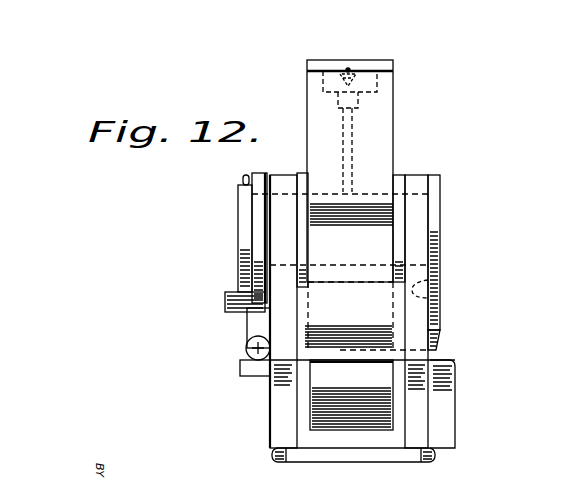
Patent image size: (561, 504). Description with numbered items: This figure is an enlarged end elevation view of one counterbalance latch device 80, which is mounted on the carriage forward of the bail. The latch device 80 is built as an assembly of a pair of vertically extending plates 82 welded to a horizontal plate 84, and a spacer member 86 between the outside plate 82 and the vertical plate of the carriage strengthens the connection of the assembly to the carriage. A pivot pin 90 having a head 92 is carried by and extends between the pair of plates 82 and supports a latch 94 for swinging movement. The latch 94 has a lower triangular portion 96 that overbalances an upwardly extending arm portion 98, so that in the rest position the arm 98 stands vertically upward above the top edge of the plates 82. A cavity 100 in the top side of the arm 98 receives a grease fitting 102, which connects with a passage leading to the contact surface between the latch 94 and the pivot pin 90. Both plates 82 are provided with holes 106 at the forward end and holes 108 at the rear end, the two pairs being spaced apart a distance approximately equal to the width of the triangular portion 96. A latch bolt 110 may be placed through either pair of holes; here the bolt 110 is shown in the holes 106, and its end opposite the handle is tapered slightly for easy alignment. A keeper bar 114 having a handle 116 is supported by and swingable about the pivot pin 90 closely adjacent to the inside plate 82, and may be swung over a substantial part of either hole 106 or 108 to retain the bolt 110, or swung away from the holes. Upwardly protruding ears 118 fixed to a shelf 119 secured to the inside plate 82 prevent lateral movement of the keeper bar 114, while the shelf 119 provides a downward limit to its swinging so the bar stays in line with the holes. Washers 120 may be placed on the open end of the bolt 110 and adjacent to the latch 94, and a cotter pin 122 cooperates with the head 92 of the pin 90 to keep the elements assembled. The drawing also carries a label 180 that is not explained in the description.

The counterbalance latch device 80 is at (475, 135).
The vertically extending plates 82 is at (283, 174).
The horizontal plate 84 is at (352, 455).
The spacer member 86 is at (452, 408).
The pivot pin 90 is at (238, 229).
The head 92 is at (440, 223).
The latch 94 is at (396, 101).
The lower triangular portion 96 is at (372, 385).
The arm portion 98 is at (380, 135).
The cavity 100 is at (334, 67).
The grease fitting 102 is at (362, 70).
The holes 106 is at (437, 292).
The holes 108 is at (353, 153).
The latch bolt 110 is at (440, 328).
The keeper bar 114 is at (262, 173).
The handle 116 is at (225, 299).
The ears 118 is at (248, 334).
The shelf 119 is at (244, 369).
The washers 120 is at (400, 175).
The cotter pin 122 is at (245, 189).
The spring 180 is at (303, 233).